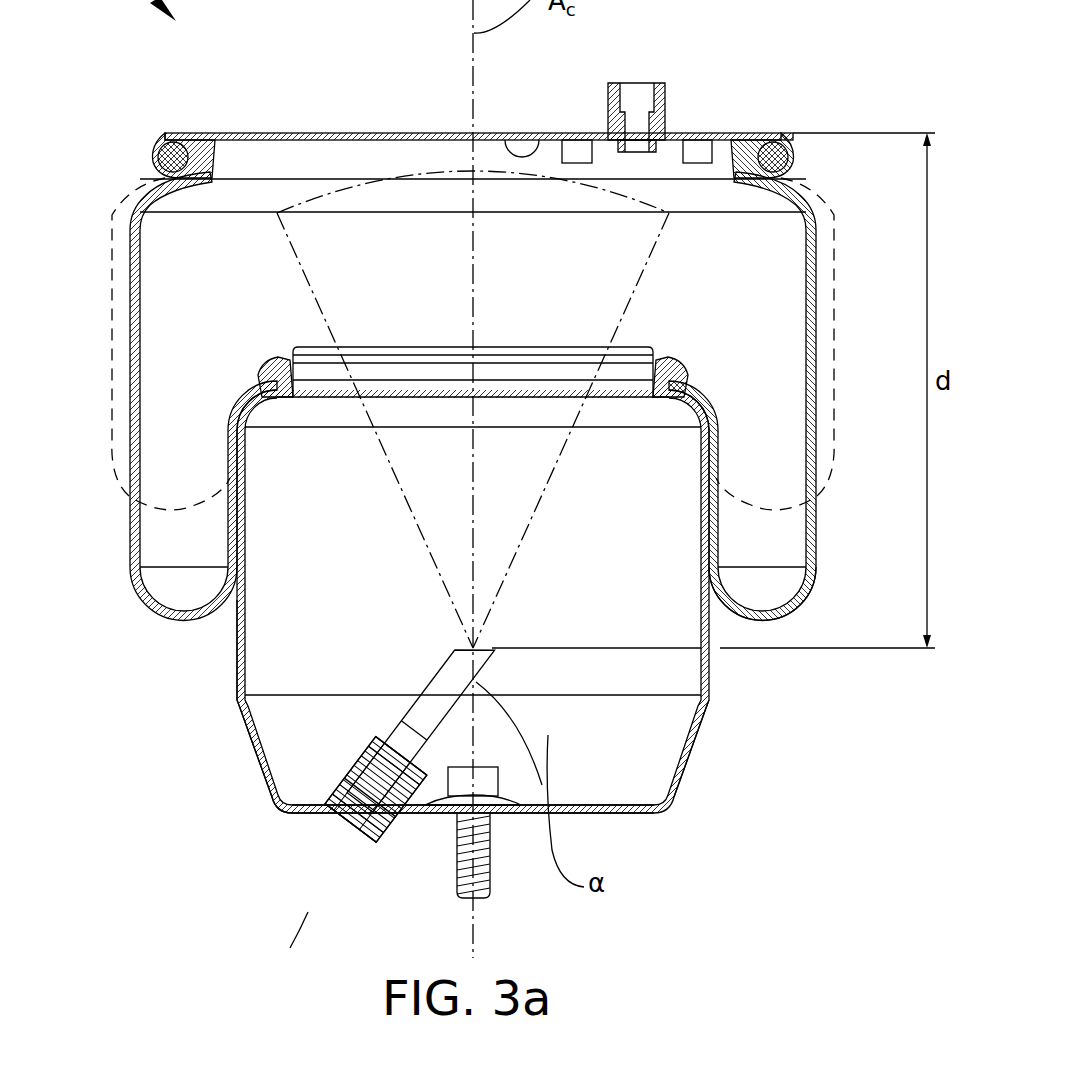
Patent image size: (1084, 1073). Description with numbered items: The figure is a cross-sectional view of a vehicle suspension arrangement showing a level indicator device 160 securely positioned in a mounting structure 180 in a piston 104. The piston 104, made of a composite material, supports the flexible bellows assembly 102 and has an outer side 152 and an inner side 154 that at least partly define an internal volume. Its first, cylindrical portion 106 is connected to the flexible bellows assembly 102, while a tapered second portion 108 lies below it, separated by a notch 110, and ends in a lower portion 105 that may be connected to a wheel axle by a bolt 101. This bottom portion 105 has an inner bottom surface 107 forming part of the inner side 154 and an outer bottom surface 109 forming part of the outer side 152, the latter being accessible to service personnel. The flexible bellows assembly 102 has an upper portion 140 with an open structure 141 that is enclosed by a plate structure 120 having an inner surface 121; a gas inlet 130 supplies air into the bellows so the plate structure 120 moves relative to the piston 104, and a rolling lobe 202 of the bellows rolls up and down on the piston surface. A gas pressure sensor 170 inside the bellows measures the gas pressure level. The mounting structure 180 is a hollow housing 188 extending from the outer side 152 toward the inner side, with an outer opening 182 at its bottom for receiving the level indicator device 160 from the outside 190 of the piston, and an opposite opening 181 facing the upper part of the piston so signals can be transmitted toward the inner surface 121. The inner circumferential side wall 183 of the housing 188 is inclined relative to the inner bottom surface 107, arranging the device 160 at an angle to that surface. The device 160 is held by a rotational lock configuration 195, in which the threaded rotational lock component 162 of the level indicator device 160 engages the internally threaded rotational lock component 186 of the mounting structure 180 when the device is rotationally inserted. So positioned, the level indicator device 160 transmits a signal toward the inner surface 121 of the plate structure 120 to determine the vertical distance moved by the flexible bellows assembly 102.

The bolt 101 is at (490, 875).
The flexible bellows assembly 102 is at (817, 265).
The piston 104 is at (712, 670).
The lower portion 105 is at (635, 814).
The first, cylindrical portion 106 is at (275, 632).
The inner bottom surface 107 is at (578, 775).
The second portion 108 is at (300, 738).
The outer bottom surface 109 is at (640, 814).
The notch 110 is at (242, 712).
The plate structure 120 is at (398, 133).
The inner surface 121 is at (540, 138).
The gas inlet 130 is at (637, 100).
The upper portion 140 is at (778, 133).
The open structure 141 is at (283, 165).
The outer side 152 is at (708, 710).
The inner side 154 is at (650, 738).
The level indicator device 160 is at (450, 680).
The rotational lock component 162 is at (380, 253).
The gas pressure sensor 170 is at (697, 152).
The mounting structure 180 is at (318, 862).
The opposite opening 181 is at (350, 772).
The outer opening 182 is at (313, 900).
The inner circumferential side wall 183 is at (350, 790).
The rotational lock component 186 is at (393, 850).
The hollow housing 188 is at (318, 862).
The outside 190 is at (110, 675).
The rotational lock configuration 195 is at (272, 936).
The rolling lobe 202 is at (800, 612).